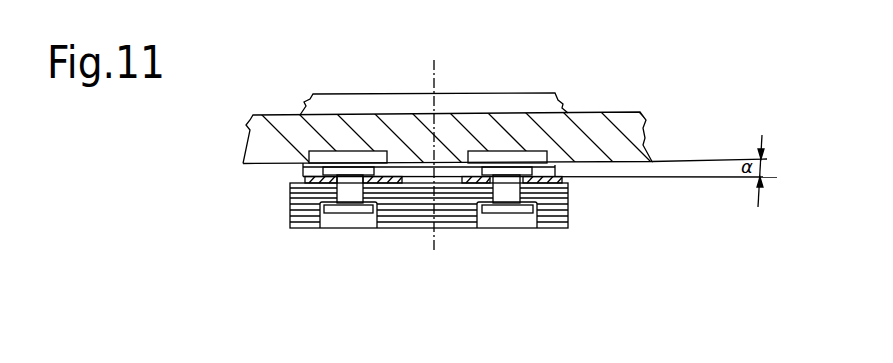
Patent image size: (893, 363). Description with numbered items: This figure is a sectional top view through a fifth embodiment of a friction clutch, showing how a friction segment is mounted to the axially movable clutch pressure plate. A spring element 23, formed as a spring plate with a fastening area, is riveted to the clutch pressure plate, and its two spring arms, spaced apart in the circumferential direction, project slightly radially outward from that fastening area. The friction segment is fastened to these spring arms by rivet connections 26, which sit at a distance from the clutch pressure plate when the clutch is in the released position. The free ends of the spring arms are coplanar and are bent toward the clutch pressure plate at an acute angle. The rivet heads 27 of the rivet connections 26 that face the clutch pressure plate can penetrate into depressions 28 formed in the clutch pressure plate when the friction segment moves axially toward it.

The spring element 23 is at (303, 179).
The rivet connections 26 is at (500, 205).
The rivet heads 27 is at (340, 173).
The depressions 28 is at (300, 115).